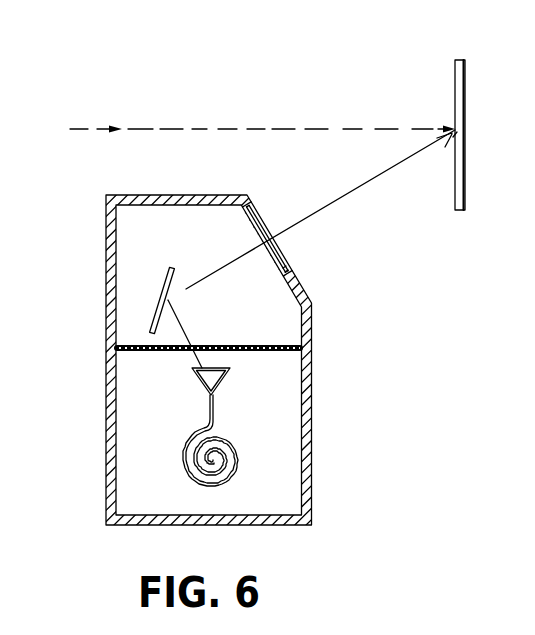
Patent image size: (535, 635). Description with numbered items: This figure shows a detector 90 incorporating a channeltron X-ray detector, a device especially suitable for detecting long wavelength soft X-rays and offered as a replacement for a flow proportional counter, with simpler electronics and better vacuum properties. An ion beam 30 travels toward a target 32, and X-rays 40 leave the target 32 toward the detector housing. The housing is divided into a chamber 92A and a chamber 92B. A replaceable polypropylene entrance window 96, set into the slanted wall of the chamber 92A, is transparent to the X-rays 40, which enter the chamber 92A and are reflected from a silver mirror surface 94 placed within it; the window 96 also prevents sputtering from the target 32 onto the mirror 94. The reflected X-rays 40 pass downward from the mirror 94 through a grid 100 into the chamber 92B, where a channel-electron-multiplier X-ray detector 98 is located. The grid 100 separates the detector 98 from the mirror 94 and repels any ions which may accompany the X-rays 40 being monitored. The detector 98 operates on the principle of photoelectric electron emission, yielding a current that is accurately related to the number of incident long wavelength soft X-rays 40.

The ion beam 30 is at (195, 127).
The target 32 is at (455, 202).
The X-rays 40 is at (312, 214).
The detector 90 is at (386, 304).
The chamber 92A is at (125, 223).
The chamber 92B is at (125, 482).
The silver mirror surface 94 is at (170, 272).
The replaceable polypropylene entrance window 96 is at (267, 222).
The channel-electron-multiplier X-ray detector 98 is at (247, 457).
The grid 100 is at (127, 352).